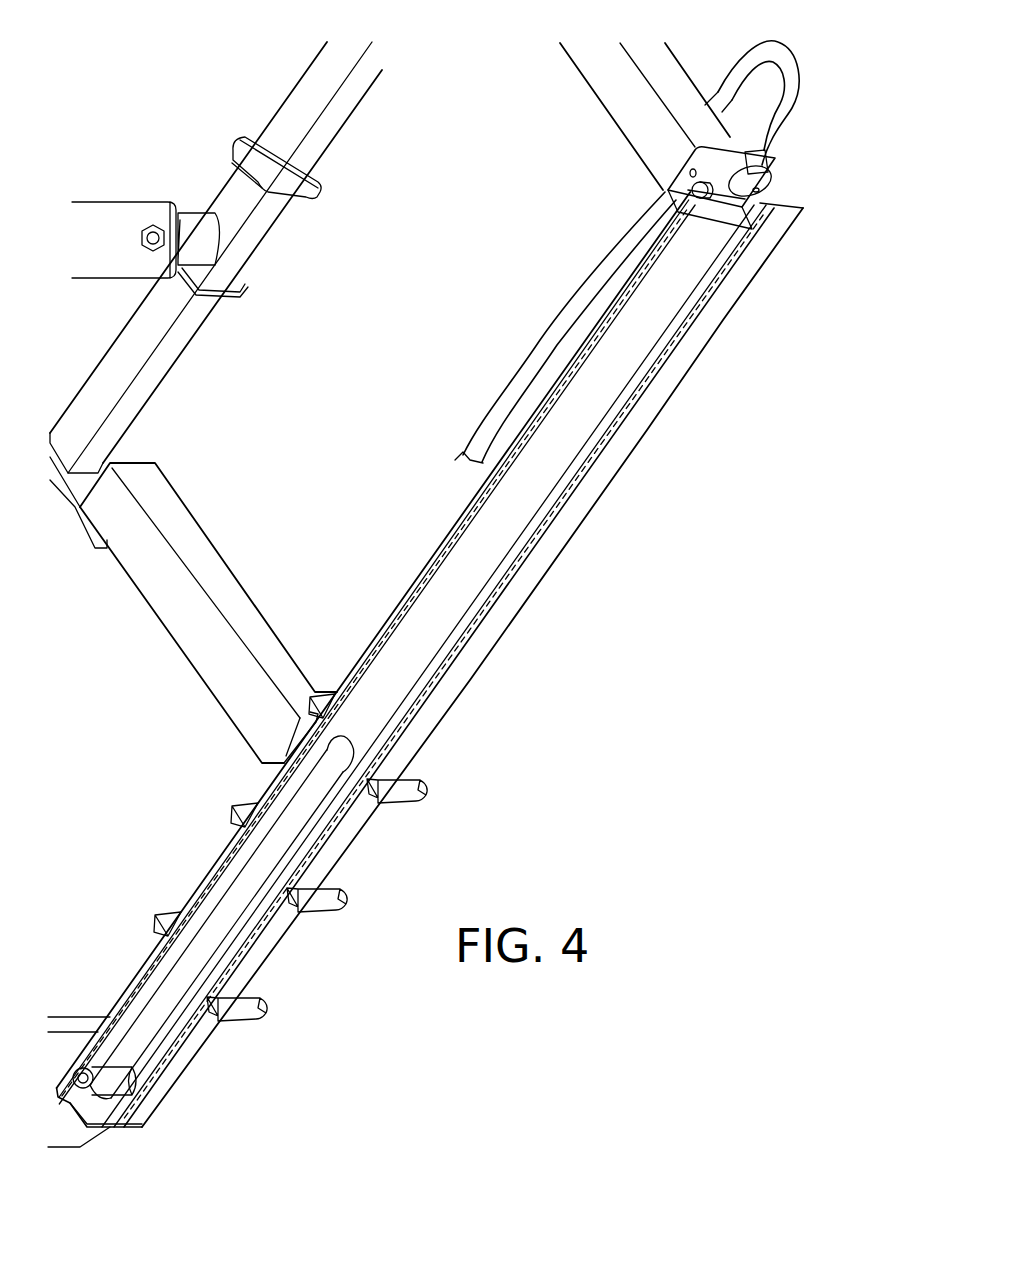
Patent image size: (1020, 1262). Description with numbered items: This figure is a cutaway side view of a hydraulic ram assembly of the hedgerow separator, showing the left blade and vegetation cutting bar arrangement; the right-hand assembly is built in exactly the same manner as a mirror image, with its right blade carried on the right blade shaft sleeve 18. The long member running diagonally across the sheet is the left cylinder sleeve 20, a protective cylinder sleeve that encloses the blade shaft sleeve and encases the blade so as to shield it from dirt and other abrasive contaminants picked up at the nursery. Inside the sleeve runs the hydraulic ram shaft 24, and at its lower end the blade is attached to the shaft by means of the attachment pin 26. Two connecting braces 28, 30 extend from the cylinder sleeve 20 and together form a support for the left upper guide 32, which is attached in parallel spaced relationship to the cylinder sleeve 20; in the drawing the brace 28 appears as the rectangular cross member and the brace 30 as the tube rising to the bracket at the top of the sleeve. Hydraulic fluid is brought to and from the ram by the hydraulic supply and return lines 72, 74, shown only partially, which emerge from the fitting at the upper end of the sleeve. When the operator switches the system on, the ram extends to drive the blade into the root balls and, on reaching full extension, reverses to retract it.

The right blade shaft sleeve 18 is at (165, 1073).
The left cylinder sleeve 20 is at (470, 660).
The hydraulic ram shaft 24 is at (163, 988).
The attachment pin 26 is at (83, 1077).
The connecting brace 28 is at (230, 593).
The connecting brace 30 is at (670, 70).
The left upper guide 32 is at (313, 148).
The hydraulic supply and return line 72 is at (550, 332).
The hydraulic supply and return line 74 is at (563, 295).